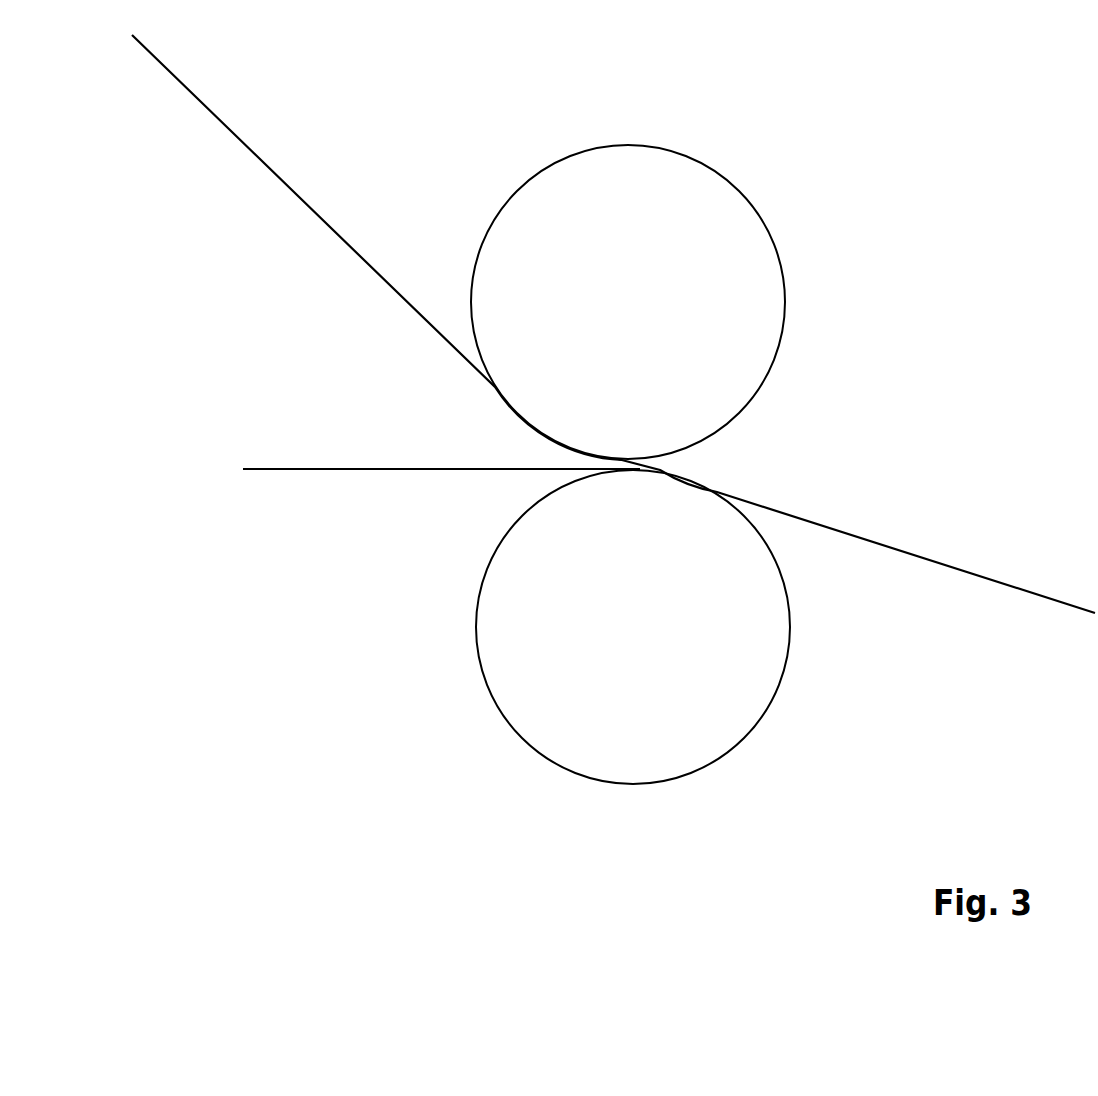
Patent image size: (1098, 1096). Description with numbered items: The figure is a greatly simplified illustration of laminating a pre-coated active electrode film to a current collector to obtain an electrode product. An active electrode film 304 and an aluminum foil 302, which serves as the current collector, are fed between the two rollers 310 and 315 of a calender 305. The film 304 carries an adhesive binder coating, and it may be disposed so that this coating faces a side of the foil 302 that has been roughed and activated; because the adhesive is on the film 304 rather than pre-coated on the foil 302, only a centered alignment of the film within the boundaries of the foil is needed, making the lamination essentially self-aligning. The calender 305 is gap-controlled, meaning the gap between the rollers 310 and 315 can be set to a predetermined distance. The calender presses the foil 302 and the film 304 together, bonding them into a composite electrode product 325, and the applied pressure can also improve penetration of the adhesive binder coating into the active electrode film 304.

The aluminum foil 302 is at (372, 468).
The active electrode film 304 is at (197, 98).
The calender 305 is at (713, 464).
The roller 310 is at (628, 302).
The roller 315 is at (633, 627).
The composite electrode product 325 is at (927, 555).